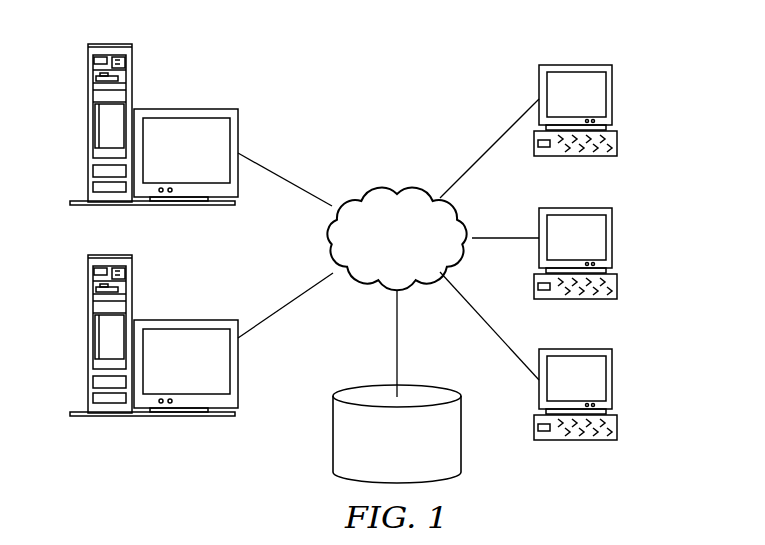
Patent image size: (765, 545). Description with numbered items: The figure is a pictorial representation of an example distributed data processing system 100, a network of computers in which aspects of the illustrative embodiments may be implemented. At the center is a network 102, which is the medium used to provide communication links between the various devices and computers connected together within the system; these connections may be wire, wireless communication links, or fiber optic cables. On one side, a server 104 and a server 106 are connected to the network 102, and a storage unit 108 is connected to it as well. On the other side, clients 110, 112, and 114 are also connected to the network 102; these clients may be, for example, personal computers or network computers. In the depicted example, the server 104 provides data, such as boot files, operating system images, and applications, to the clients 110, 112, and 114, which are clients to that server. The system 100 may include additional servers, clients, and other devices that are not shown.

The distributed data processing system 100 is at (452, 71).
The network 102 is at (390, 186).
The server 104 is at (88, 125).
The server 106 is at (88, 338).
The storage unit 108 is at (333, 440).
The client 110 is at (613, 88).
The client 112 is at (613, 232).
The client 114 is at (613, 380).